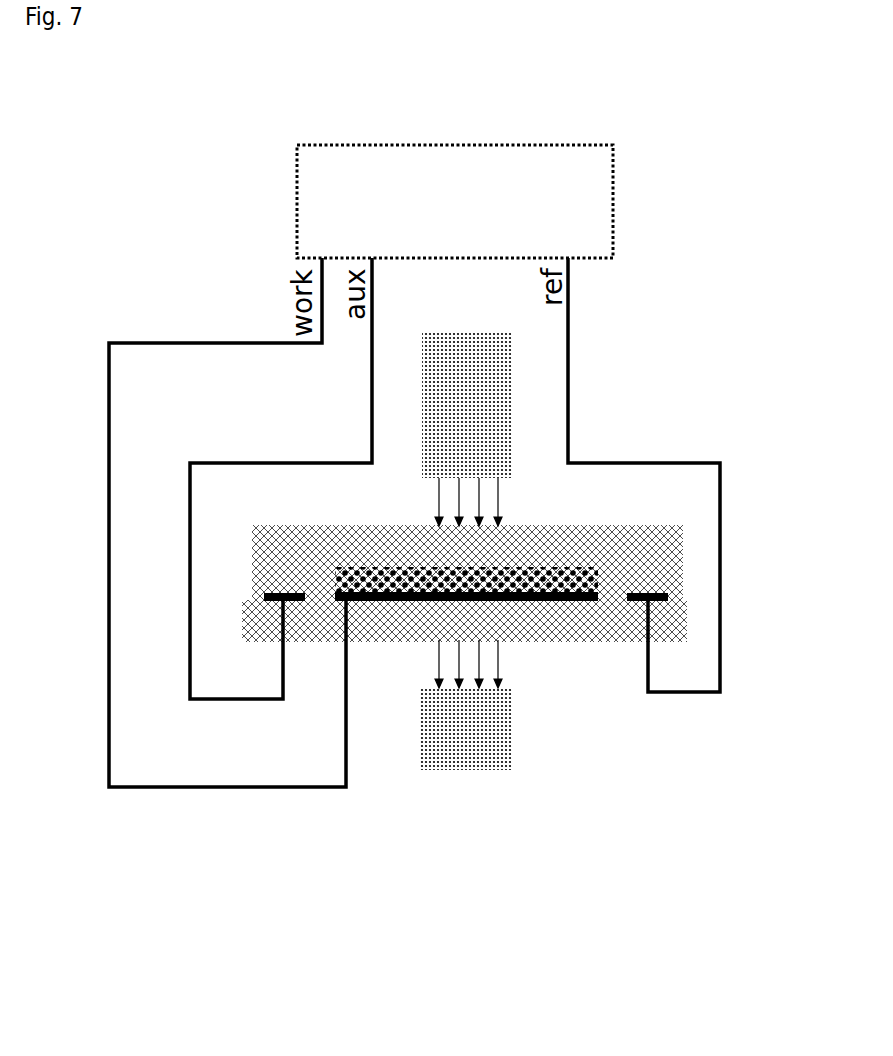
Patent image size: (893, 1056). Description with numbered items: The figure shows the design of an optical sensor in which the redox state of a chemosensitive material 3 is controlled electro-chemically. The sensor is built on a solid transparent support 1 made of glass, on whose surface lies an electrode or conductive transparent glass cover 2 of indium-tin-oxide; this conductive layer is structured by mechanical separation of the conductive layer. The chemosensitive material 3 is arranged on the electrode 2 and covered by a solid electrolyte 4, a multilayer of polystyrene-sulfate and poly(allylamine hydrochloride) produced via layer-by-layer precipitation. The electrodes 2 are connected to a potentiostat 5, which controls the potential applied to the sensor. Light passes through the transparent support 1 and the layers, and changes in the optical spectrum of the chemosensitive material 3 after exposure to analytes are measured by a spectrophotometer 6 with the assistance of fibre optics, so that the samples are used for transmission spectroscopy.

The solid transparent support 1 is at (548, 600).
The electrode or conductive transparent glass cover 2 is at (578, 601).
The chemosensitive material 3 is at (583, 567).
The solid electrolyte 4 is at (605, 576).
The potentiostat 5 is at (450, 167).
The spectrophotometer 6 is at (465, 395).